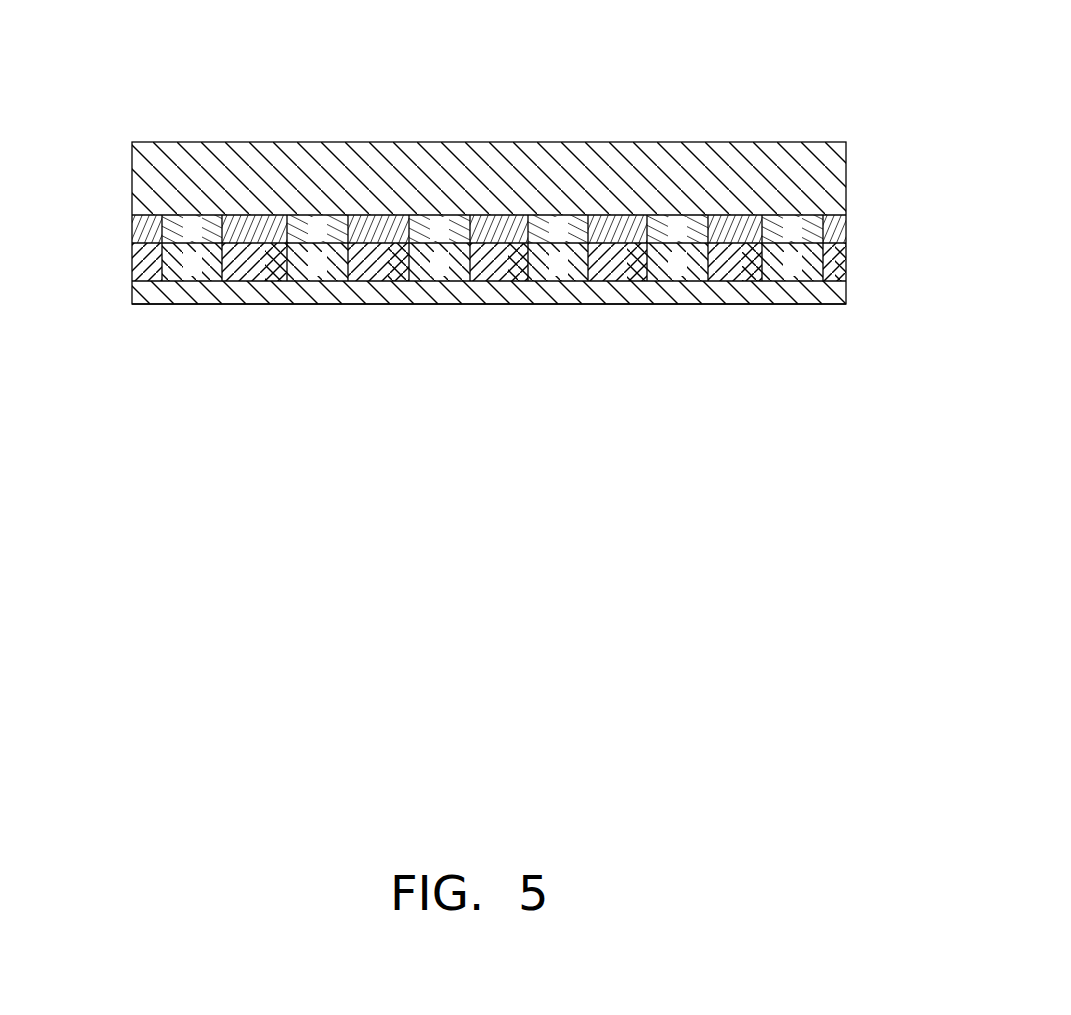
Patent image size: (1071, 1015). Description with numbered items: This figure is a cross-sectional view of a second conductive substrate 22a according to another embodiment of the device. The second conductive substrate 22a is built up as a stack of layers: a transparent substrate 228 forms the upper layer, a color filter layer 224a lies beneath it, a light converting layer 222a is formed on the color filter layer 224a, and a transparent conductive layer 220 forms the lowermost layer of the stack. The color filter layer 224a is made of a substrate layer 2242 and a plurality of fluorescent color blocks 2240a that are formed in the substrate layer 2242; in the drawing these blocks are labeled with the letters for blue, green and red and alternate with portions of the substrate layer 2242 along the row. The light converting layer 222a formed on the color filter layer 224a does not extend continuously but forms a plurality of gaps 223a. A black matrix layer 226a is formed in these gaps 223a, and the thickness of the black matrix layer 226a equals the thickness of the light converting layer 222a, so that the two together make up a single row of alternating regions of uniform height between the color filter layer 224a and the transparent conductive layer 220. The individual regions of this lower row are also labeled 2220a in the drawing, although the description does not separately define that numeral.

The second conductive substrate 22a is at (468, 63).
The transparent substrate 228 is at (328, 165).
The color filter layer 224a is at (240, 68).
The substrate layer 2242 is at (135, 221).
The fluorescent color blocks 2240a is at (178, 220).
The black matrix layer 226a is at (143, 262).
The pixel unit 2220a is at (183, 268).
The gaps 223a is at (769, 277).
The light converting layer 222a is at (834, 270).
The transparent conductive layer 220 is at (148, 293).